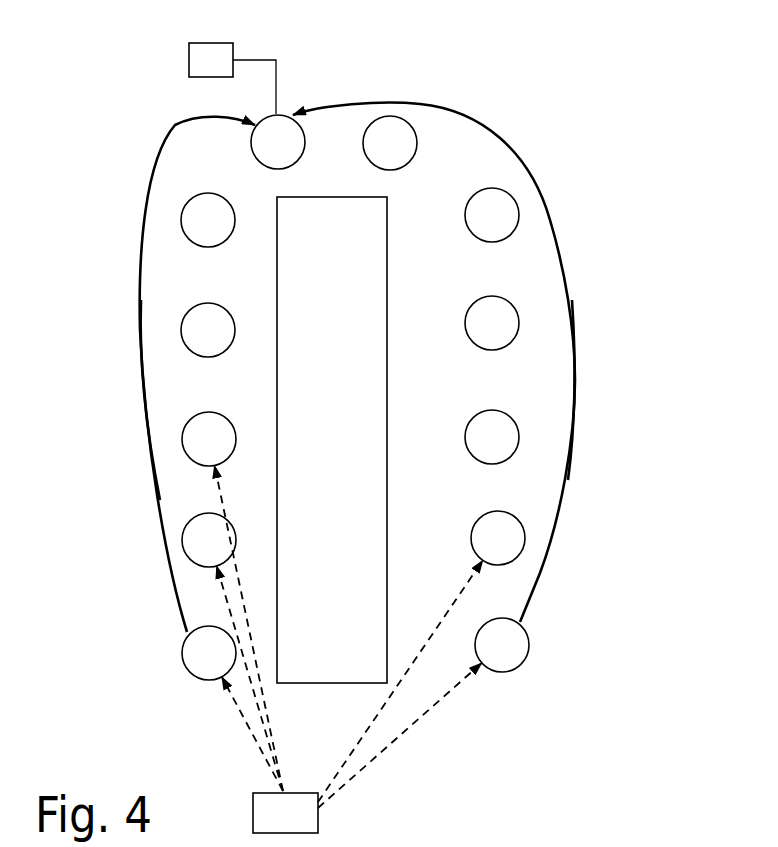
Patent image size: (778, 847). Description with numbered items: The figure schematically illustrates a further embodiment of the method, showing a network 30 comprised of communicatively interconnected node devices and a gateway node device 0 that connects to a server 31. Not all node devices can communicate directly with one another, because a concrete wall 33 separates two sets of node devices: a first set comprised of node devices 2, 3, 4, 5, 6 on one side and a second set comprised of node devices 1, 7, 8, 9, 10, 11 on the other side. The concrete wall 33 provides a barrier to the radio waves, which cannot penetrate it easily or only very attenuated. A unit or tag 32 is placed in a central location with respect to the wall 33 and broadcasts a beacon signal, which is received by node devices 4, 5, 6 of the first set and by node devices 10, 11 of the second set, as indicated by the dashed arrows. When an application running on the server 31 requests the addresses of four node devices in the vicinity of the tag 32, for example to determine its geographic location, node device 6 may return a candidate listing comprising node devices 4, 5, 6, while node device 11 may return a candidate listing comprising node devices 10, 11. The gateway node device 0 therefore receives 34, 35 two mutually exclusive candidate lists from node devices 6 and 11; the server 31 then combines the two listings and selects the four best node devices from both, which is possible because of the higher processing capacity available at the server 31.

The network 30 is at (517, 97).
The server 31 is at (212, 43).
The tag 32 is at (310, 823).
The concrete wall 33 is at (387, 404).
The receiving of first candidate list 34 is at (140, 357).
The receiving of second candidate list 35 is at (573, 362).
The gateway node device 0 is at (278, 142).
The node device 1 is at (390, 143).
The node device 2 is at (208, 220).
The node device 3 is at (208, 330).
The node device 4 is at (209, 439).
The node device 5 is at (209, 540).
The node device 6 is at (209, 653).
The node device 7 is at (492, 215).
The node device 8 is at (492, 323).
The node device 9 is at (492, 437).
The node device 10 is at (498, 538).
The node device 11 is at (502, 645).